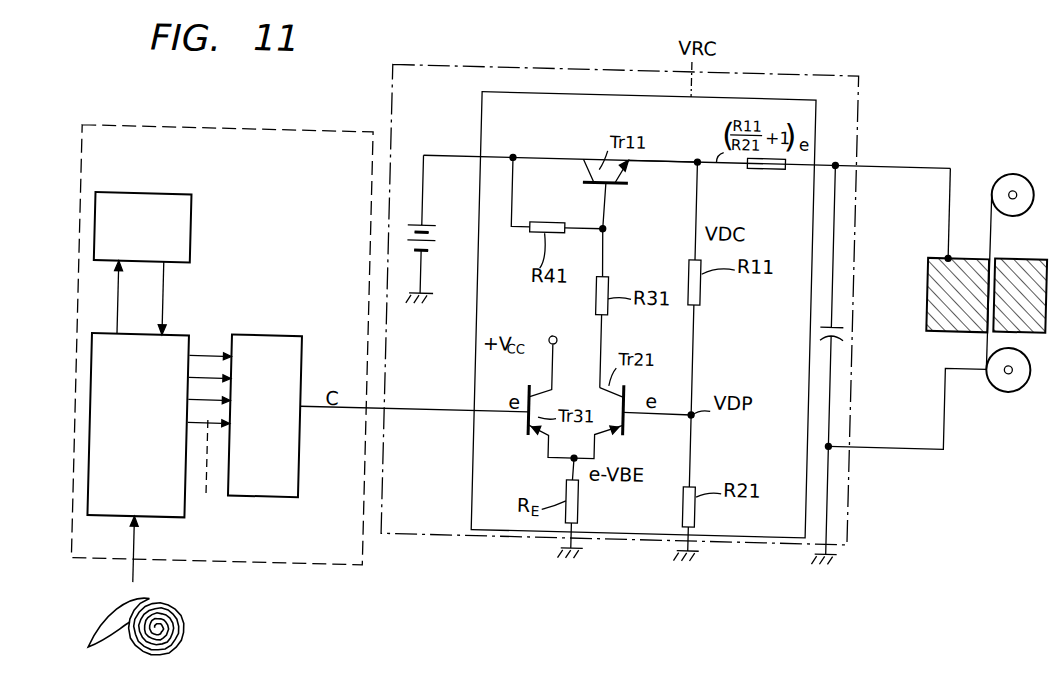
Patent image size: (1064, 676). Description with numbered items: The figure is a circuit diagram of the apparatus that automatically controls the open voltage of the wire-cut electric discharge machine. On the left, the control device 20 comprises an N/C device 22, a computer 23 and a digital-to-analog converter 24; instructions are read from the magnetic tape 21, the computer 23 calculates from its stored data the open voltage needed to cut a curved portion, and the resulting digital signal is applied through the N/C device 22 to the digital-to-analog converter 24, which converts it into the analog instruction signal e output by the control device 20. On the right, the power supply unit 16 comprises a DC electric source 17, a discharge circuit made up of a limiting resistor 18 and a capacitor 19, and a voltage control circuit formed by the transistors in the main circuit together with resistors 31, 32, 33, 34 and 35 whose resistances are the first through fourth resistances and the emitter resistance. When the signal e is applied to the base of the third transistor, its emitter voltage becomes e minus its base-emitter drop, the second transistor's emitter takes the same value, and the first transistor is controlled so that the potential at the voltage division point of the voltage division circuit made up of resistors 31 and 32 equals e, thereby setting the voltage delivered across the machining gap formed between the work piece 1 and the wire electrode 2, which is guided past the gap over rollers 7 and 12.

The magnetic head 1 is at (926, 283).
The magnetic tape 2 is at (990, 238).
The guide roller 7 is at (1025, 170).
The guide roller 12 is at (1007, 364).
The power supply unit 16 is at (855, 103).
The DC electric source 17 is at (427, 236).
The limiting resistor 18 is at (766, 163).
The capacitor 19 is at (845, 333).
The control device 20 is at (372, 534).
The magnetic tape 21 is at (196, 637).
The N/C device 22 is at (182, 344).
The computer 23 is at (172, 203).
The digital-to-analog converter 24 is at (270, 342).
The resistor 31 is at (700, 296).
The resistor 32 is at (700, 513).
The resistor 33 is at (609, 283).
The resistor 34 is at (538, 222).
The resistor 35 is at (583, 510).